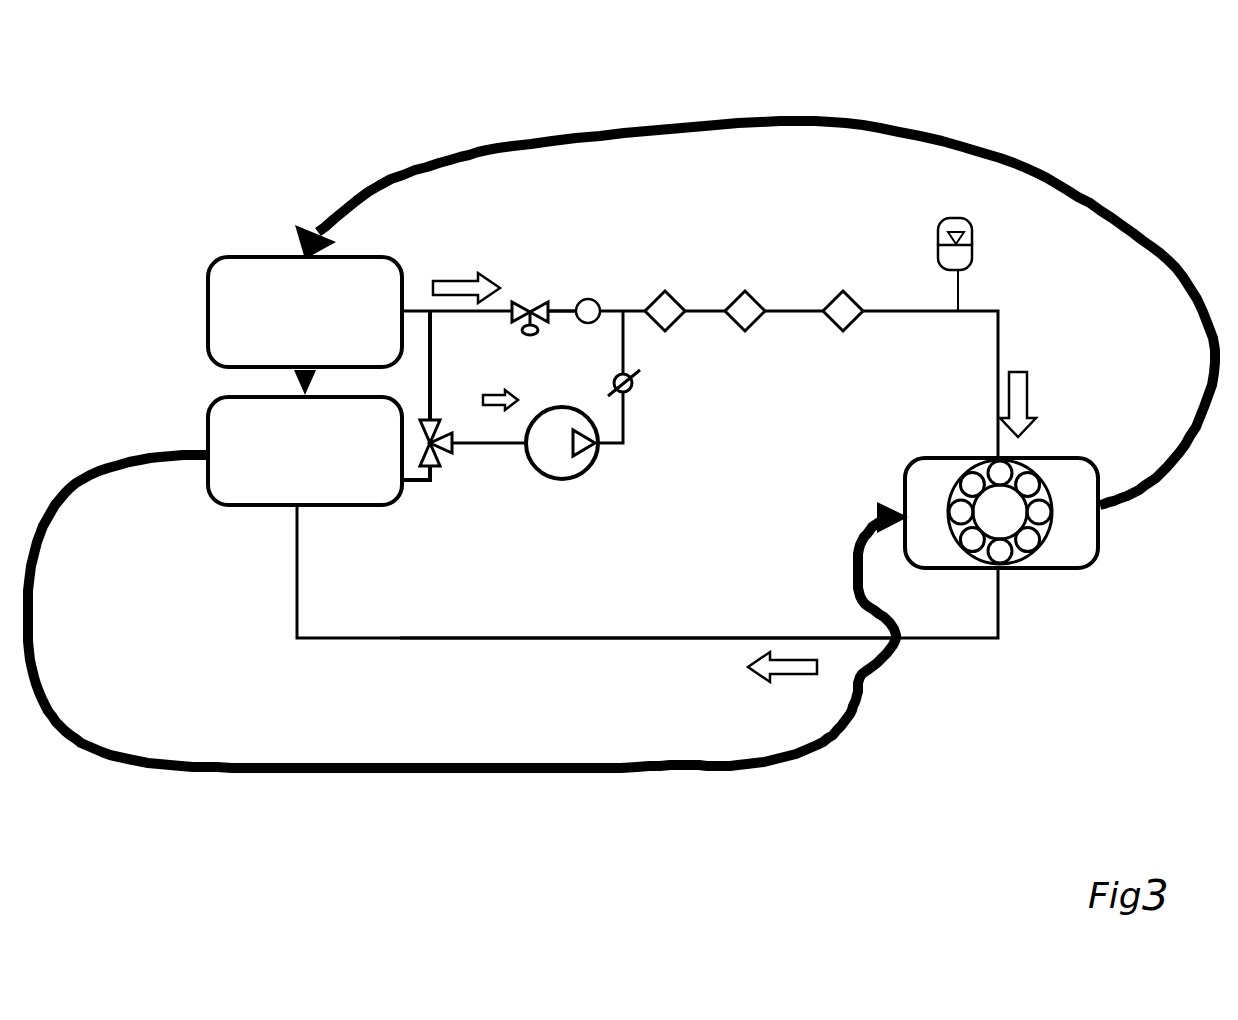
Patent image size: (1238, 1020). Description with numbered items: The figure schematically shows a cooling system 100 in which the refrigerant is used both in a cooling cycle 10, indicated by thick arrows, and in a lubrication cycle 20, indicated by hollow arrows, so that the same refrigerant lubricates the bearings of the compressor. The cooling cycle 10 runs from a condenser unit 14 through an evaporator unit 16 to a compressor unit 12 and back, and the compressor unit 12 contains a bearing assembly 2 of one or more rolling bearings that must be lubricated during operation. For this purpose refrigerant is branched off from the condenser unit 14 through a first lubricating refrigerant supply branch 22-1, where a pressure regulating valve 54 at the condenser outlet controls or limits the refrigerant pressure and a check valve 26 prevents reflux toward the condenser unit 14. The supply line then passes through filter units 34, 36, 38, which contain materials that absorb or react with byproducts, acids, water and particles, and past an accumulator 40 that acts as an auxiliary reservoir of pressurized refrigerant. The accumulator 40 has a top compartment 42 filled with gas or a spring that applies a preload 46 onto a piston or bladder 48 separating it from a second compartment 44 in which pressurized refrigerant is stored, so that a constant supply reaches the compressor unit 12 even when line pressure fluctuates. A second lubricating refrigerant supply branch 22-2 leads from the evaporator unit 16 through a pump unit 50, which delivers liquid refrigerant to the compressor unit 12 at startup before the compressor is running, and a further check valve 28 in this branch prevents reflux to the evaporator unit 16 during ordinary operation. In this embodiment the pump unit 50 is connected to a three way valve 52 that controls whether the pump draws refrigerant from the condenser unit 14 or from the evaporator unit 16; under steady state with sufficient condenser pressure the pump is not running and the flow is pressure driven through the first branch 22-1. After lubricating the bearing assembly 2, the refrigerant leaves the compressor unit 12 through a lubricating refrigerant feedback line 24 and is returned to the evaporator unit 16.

The cooling system 100 is at (632, 36).
The cooling cycle 10 is at (821, 104).
The condenser unit 14 is at (257, 278).
The evaporator unit 16 is at (380, 488).
The compressor unit 12 is at (1085, 553).
The bearing assembly 2 is at (1022, 556).
The lubrication cycle 20 is at (486, 320).
The first lubricating refrigerant supply branch 22-1 is at (557, 300).
The second lubricating refrigerant supply branch 22-2 is at (442, 480).
The lubricating refrigerant feedback line 24 is at (582, 642).
The check valve 26 is at (582, 318).
The further check valve 28 is at (633, 380).
The filter unit 34 is at (665, 303).
The filter unit 36 is at (746, 302).
The filter unit 38 is at (843, 302).
The accumulator 40 is at (956, 244).
The top compartment 42 is at (955, 231).
The second compartment 44 is at (967, 262).
The preload 46 is at (966, 240).
The piston or bladder 48 is at (955, 257).
The pump unit 50 is at (577, 478).
The three way valve 52 is at (445, 465).
The pressure regulating valve 54 is at (522, 302).